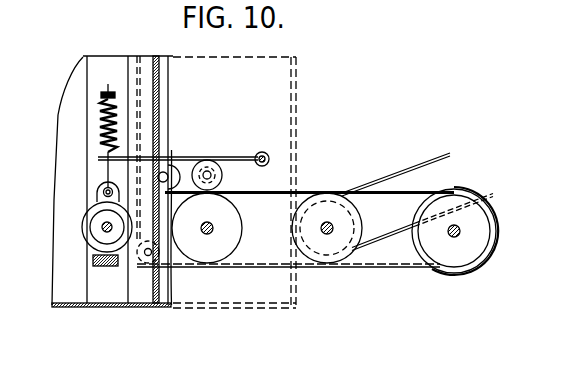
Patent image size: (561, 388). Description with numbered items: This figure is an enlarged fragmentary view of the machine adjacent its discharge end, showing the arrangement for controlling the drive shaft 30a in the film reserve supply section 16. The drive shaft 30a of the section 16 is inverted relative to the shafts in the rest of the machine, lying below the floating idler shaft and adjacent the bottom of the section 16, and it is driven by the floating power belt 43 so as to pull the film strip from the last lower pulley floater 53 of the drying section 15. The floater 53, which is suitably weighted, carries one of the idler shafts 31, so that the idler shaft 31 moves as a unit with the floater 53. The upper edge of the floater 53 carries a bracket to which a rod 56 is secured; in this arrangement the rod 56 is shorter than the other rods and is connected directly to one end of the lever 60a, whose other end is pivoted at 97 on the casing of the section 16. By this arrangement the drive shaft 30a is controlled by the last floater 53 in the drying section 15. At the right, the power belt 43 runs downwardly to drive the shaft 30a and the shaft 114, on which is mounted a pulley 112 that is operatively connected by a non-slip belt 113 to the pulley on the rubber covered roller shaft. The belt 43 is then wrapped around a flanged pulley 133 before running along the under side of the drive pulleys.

The drying section 15 is at (75, 90).
The rod 56 is at (108, 86).
The film reserve supply section 16 is at (287, 83).
The lever 60a is at (186, 156).
The pivot 97 is at (264, 152).
The idler shaft 31 is at (103, 231).
The lower pulley floater 53 is at (92, 262).
The drive shaft 30a is at (207, 234).
The floating power belt 43 is at (411, 268).
The pulley 112 is at (353, 222).
The shaft 114 is at (329, 221).
The non-slip belt 113 is at (402, 173).
The flanged pulley 133 is at (457, 273).